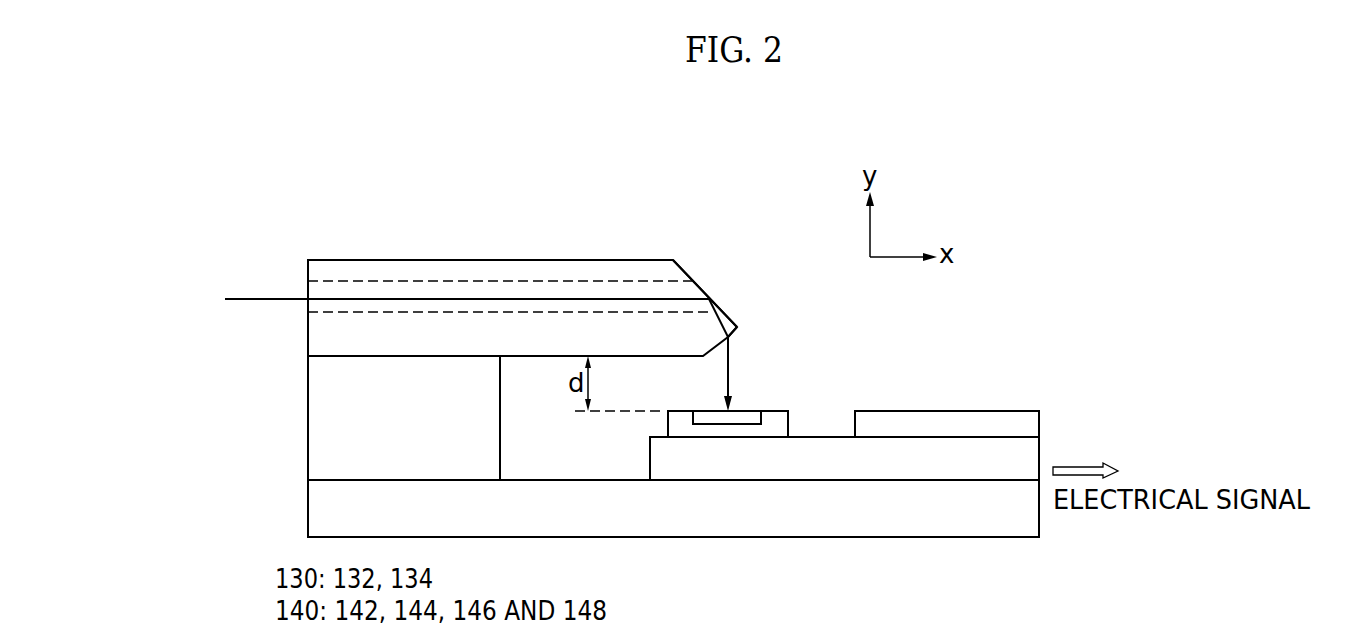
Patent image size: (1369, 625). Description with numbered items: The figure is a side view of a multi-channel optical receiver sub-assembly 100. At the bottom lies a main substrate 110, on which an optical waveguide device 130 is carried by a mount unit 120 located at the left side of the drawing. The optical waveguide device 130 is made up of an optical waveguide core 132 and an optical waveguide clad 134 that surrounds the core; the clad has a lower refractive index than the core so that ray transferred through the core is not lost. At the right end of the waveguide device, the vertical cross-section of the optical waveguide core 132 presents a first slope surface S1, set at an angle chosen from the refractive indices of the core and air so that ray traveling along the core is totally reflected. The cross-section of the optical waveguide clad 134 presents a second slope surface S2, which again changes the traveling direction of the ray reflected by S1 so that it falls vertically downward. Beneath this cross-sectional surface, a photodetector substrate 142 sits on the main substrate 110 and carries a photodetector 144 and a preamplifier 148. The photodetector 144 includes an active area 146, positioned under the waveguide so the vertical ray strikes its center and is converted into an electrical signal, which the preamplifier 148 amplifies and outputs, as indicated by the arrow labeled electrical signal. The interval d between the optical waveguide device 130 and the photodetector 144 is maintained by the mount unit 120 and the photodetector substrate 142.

The multi-channel optical receiver sub-assembly 100 is at (721, 172).
The main substrate 110 is at (325, 512).
The mount unit 120 is at (325, 422).
The optical waveguide device 130 is at (316, 228).
The optical waveguide core 132 is at (388, 290).
The optical waveguide clad 134 is at (472, 270).
The photodetector substrate 142 is at (1020, 453).
The photodetector 144 is at (788, 427).
The active area 146 is at (755, 410).
The preamplifier 148 is at (960, 411).
The first slope surface S1 is at (703, 282).
The second slope surface S2 is at (737, 337).